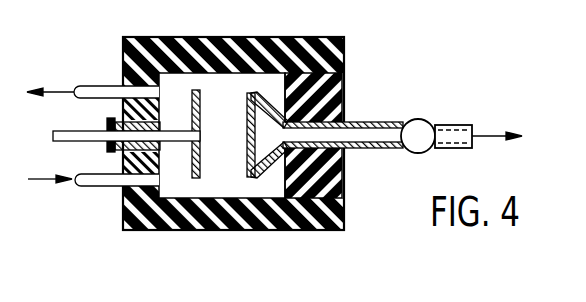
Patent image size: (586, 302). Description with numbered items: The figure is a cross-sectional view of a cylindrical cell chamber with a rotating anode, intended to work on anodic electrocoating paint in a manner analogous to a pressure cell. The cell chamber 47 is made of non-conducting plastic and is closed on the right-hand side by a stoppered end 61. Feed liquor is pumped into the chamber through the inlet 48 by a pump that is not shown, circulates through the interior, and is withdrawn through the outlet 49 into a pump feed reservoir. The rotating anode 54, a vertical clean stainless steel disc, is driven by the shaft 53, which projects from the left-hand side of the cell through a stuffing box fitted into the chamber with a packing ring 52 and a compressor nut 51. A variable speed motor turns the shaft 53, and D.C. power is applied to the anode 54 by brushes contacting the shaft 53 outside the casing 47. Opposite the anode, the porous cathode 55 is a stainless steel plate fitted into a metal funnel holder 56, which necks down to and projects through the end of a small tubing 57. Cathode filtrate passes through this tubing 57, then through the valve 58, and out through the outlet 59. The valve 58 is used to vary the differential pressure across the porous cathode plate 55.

The cell chamber 47 is at (239, 38).
The inlet 48 is at (80, 187).
The outlet 49 is at (80, 87).
The compressor nut 51 is at (116, 123).
The packing ring 52 is at (121, 151).
The shaft 53 is at (64, 118).
The rotating anode 54 is at (233, 125).
The porous cathode 55 is at (247, 97).
The metal funnel holder 56 is at (254, 172).
The tubing 57 is at (376, 149).
The valve 58 is at (418, 119).
The outlet 59 is at (470, 125).
The stoppered end 61 is at (344, 75).